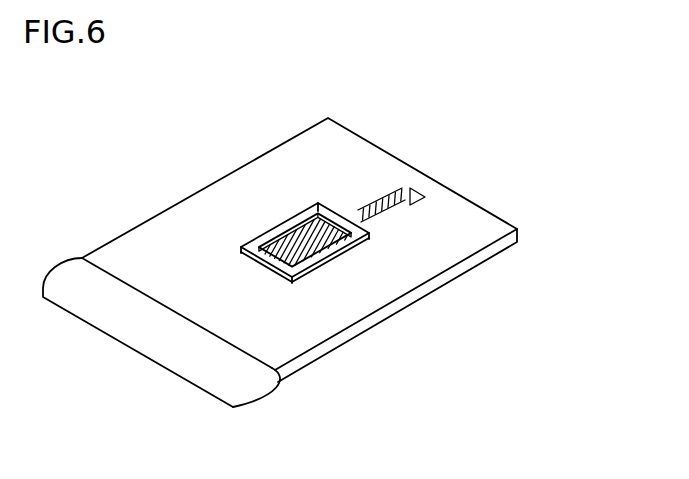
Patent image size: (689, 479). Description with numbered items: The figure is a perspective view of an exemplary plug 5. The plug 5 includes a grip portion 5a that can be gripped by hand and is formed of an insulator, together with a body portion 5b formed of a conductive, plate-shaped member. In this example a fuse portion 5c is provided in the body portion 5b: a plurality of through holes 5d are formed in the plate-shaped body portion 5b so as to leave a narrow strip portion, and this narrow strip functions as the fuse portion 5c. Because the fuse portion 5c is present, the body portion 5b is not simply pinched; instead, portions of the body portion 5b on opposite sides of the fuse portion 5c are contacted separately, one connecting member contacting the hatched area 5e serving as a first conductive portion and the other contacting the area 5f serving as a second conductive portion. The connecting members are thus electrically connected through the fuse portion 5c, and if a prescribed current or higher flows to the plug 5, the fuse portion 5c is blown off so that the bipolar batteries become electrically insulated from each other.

The plug 5 is at (438, 88).
The grip portion 5a is at (142, 332).
The body portion 5b is at (447, 197).
The fuse portion 5c is at (318, 203).
The through holes 5d is at (345, 213).
The hatched area (first conductive portion) 5e is at (306, 258).
The area (second conductive portion) 5f is at (407, 190).